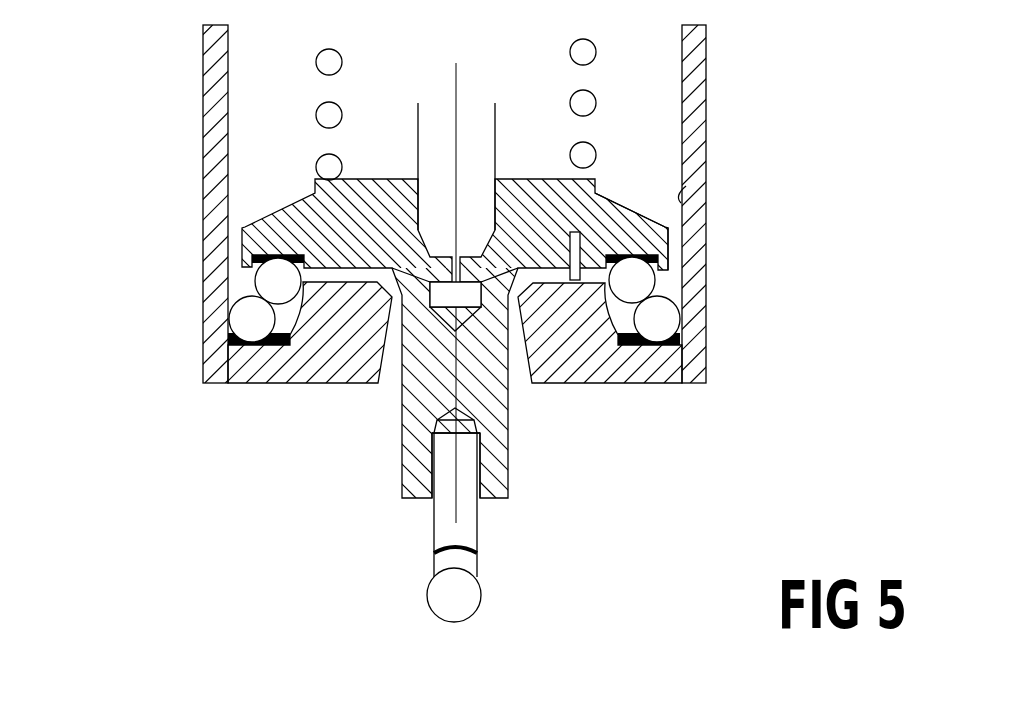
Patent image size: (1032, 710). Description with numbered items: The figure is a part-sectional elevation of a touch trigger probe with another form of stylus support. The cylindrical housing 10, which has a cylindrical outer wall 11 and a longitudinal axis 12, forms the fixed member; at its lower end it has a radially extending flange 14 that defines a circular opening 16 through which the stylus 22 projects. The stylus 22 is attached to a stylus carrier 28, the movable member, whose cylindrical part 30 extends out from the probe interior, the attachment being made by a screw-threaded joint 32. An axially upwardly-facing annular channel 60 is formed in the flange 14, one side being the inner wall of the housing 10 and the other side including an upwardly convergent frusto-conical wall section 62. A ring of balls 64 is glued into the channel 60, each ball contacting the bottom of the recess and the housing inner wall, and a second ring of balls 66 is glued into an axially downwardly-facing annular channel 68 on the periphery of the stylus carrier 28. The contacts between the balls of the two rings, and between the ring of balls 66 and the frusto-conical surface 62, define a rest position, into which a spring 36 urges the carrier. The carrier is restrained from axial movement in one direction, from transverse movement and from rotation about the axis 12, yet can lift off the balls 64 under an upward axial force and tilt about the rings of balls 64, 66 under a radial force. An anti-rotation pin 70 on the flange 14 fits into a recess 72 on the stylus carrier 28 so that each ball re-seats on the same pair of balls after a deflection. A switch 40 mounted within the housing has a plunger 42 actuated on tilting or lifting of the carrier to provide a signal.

The housing 10 is at (692, 88).
The cylindrical outer wall 11 is at (686, 186).
The longitudinal axis 12 is at (454, 90).
The flange 14 is at (290, 380).
The opening 16 is at (392, 383).
The stylus 22 is at (467, 588).
The stylus carrier 28 is at (668, 236).
The cylindrical part 30 is at (480, 398).
The screw-threaded joint 32 is at (423, 497).
The spring 36 is at (317, 59).
The switch 40 is at (482, 167).
The plunger 42 is at (502, 312).
The annular channel 60 is at (203, 377).
The frusto-conical wall section 62 is at (617, 347).
The ring of balls 64 is at (238, 317).
The second ring of balls 66 is at (265, 280).
The annular channel 68 is at (247, 249).
The anti-rotation pin 70 is at (612, 257).
The recess 72 is at (575, 249).